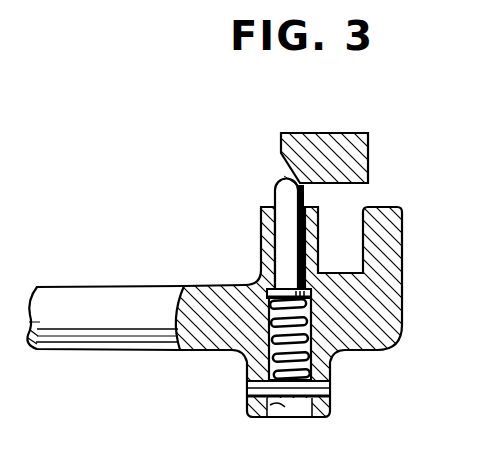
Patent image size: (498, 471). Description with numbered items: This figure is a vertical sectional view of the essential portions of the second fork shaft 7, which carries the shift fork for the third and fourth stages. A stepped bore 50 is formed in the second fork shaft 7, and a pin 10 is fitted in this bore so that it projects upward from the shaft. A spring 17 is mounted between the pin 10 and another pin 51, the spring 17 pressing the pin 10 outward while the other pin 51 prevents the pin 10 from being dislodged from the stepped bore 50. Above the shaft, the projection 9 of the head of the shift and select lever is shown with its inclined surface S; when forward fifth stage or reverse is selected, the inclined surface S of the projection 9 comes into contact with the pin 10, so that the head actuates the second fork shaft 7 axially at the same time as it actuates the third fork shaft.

The second fork shaft 7 is at (113, 340).
The projection 9 is at (369, 158).
The pin 10 is at (275, 186).
The inclined surface S is at (285, 172).
The spring 17 is at (268, 340).
The another pin 51 is at (326, 388).
The stepped bore 50 is at (280, 418).